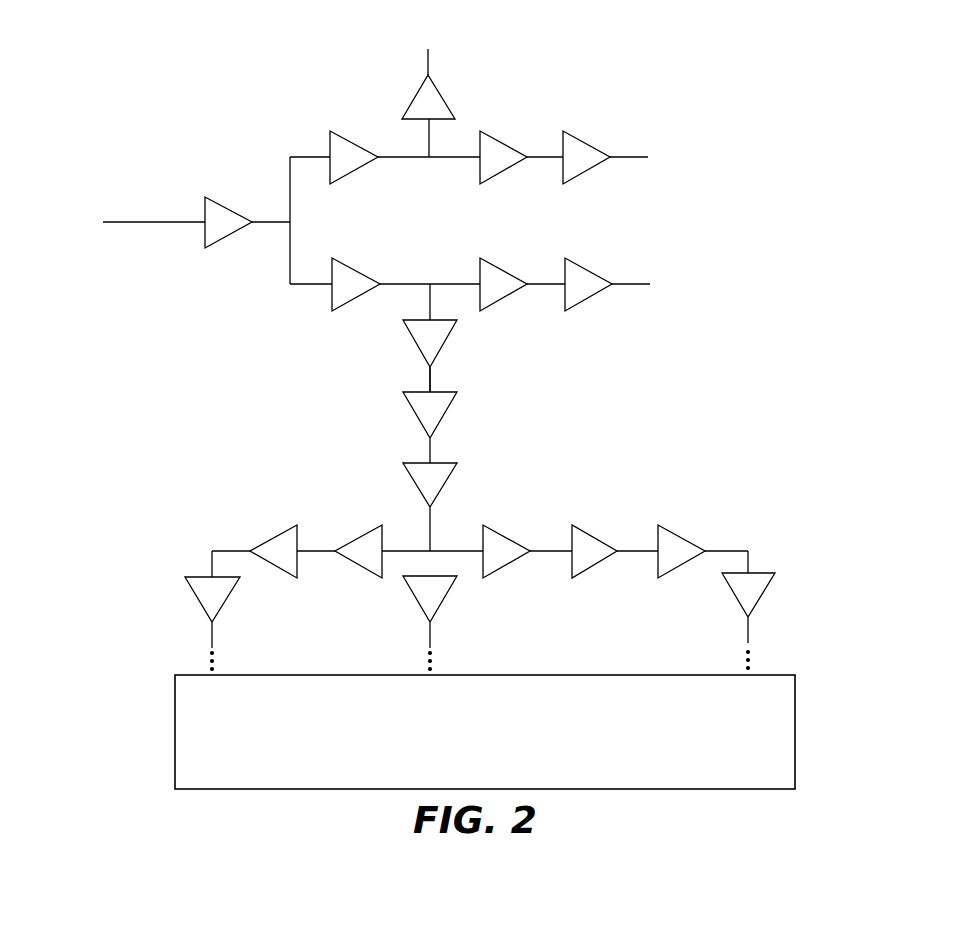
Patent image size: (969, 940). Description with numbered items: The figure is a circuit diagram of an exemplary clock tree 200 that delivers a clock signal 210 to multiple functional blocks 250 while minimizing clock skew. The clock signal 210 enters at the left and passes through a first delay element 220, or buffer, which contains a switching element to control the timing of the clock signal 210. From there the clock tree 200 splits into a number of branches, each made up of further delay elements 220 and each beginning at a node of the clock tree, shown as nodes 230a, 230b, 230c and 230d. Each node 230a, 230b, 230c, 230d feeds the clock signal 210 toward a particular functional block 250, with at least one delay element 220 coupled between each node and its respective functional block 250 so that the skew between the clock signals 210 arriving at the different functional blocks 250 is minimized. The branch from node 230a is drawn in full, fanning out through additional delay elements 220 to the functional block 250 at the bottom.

The clock tree 200 is at (220, 143).
The clock signal 210 is at (143, 224).
The delay element 220 is at (223, 247).
The clock tree node 230a is at (432, 376).
The clock tree node 230b is at (629, 282).
The clock tree node 230c is at (628, 156).
The clock tree node 230d is at (429, 58).
The functional block 250 is at (797, 722).